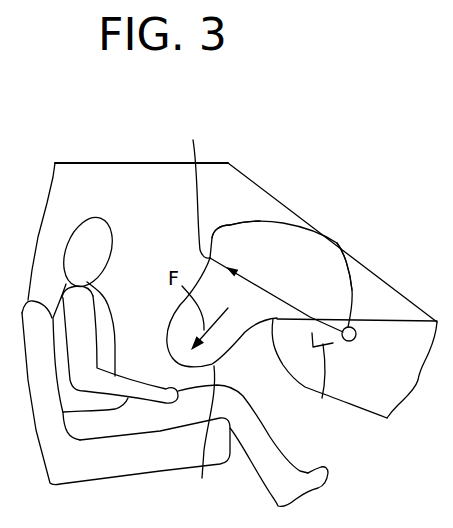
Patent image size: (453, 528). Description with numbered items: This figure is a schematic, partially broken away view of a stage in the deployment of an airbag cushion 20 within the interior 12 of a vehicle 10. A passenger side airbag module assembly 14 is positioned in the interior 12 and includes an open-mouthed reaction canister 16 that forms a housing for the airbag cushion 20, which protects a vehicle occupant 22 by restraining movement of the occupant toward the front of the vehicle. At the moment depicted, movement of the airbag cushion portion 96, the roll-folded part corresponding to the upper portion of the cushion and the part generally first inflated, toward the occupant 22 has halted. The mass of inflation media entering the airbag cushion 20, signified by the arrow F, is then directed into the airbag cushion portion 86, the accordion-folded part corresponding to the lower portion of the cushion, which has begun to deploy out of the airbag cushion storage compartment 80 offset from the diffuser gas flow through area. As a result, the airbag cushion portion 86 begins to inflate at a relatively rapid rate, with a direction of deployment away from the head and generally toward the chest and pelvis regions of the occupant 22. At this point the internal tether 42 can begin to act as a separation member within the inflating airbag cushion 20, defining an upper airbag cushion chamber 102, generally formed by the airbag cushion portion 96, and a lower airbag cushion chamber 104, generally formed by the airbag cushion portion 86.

The vehicle 10 is at (288, 146).
The interior 12 is at (137, 190).
The passenger side airbag module assembly 14 is at (366, 350).
The reaction canister 16 is at (322, 398).
The airbag cushion 20 is at (291, 223).
The vehicle occupant 22 is at (82, 335).
The internal tether 42 is at (297, 315).
The airbag cushion storage compartment 80 is at (313, 340).
The airbag cushion portion 86 is at (203, 437).
The airbag cushion portion 96 is at (235, 211).
The upper airbag cushion chamber 102 is at (319, 263).
The lower airbag cushion chamber 104 is at (190, 182).